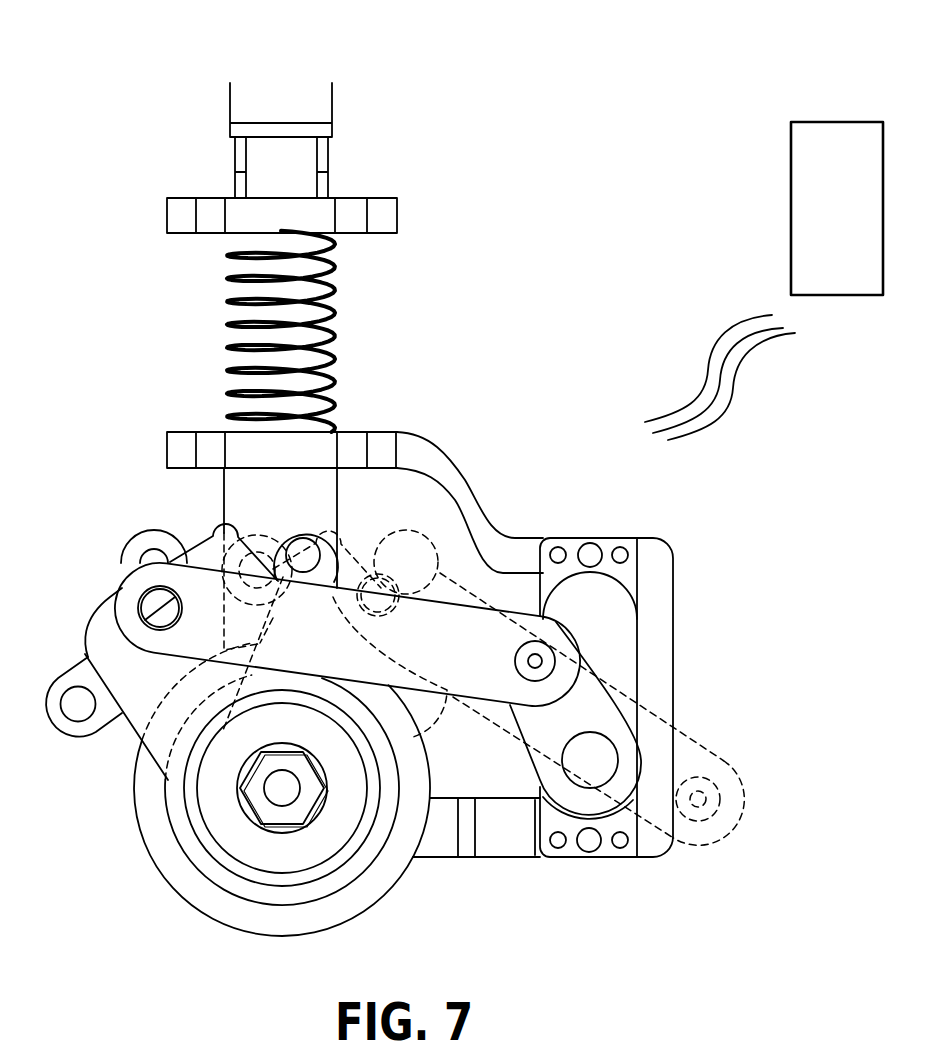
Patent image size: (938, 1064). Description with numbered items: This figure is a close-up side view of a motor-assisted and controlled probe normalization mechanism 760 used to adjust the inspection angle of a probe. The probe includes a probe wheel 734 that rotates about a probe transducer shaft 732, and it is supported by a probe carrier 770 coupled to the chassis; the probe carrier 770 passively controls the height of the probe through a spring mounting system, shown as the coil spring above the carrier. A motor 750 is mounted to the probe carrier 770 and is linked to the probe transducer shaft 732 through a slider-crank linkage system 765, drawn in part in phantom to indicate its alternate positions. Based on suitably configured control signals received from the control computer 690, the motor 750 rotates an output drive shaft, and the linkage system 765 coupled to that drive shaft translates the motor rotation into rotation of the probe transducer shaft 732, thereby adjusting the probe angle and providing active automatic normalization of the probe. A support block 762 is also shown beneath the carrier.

The motor-assisted probe normalization mechanism 760 is at (108, 106).
The probe carrier 770 is at (152, 443).
The support block 762 is at (245, 487).
The slider-crank linkage system 765 is at (430, 532).
The motor 750 is at (617, 662).
The probe wheel 734 is at (205, 895).
The probe transducer shaft 732 is at (280, 790).
The control computer 690 is at (837, 208).